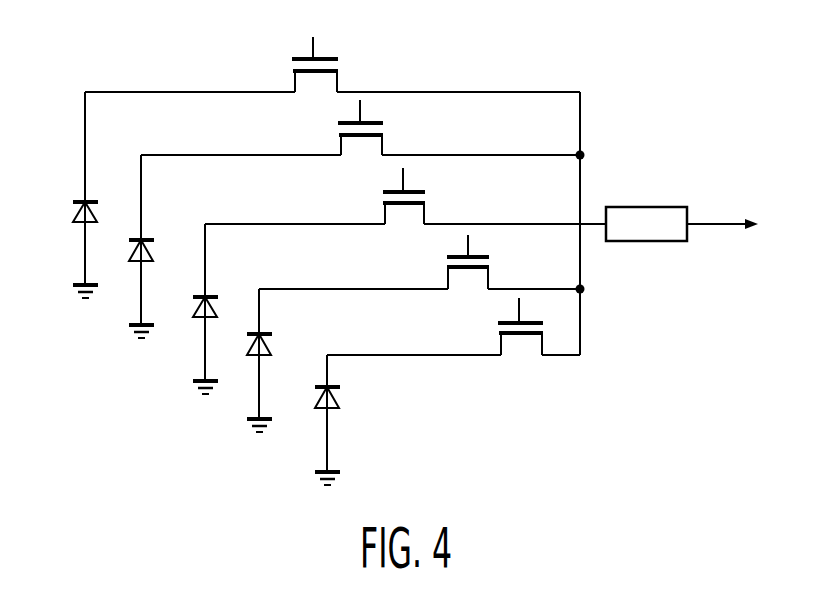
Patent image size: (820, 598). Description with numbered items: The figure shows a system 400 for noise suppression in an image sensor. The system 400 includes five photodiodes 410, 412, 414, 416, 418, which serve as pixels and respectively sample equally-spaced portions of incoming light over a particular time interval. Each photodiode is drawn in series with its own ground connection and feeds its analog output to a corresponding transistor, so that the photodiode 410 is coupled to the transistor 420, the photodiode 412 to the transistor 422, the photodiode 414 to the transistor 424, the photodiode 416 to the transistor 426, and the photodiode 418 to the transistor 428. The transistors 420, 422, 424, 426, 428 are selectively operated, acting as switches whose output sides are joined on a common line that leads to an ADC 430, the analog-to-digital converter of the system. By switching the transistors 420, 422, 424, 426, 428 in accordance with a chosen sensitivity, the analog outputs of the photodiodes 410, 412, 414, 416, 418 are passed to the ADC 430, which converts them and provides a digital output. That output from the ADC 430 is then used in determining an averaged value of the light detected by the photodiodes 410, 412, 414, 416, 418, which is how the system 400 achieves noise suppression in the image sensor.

The system 400 is at (612, 78).
The photodiode 410 is at (80, 200).
The photodiode 412 is at (142, 238).
The photodiode 414 is at (207, 295).
The photodiode 416 is at (270, 333).
The photodiode 418 is at (338, 386).
The transistor 420 is at (300, 58).
The transistor 422 is at (338, 122).
The transistor 424 is at (383, 189).
The transistor 426 is at (447, 257).
The transistor 428 is at (498, 323).
The ADC 430 is at (651, 207).